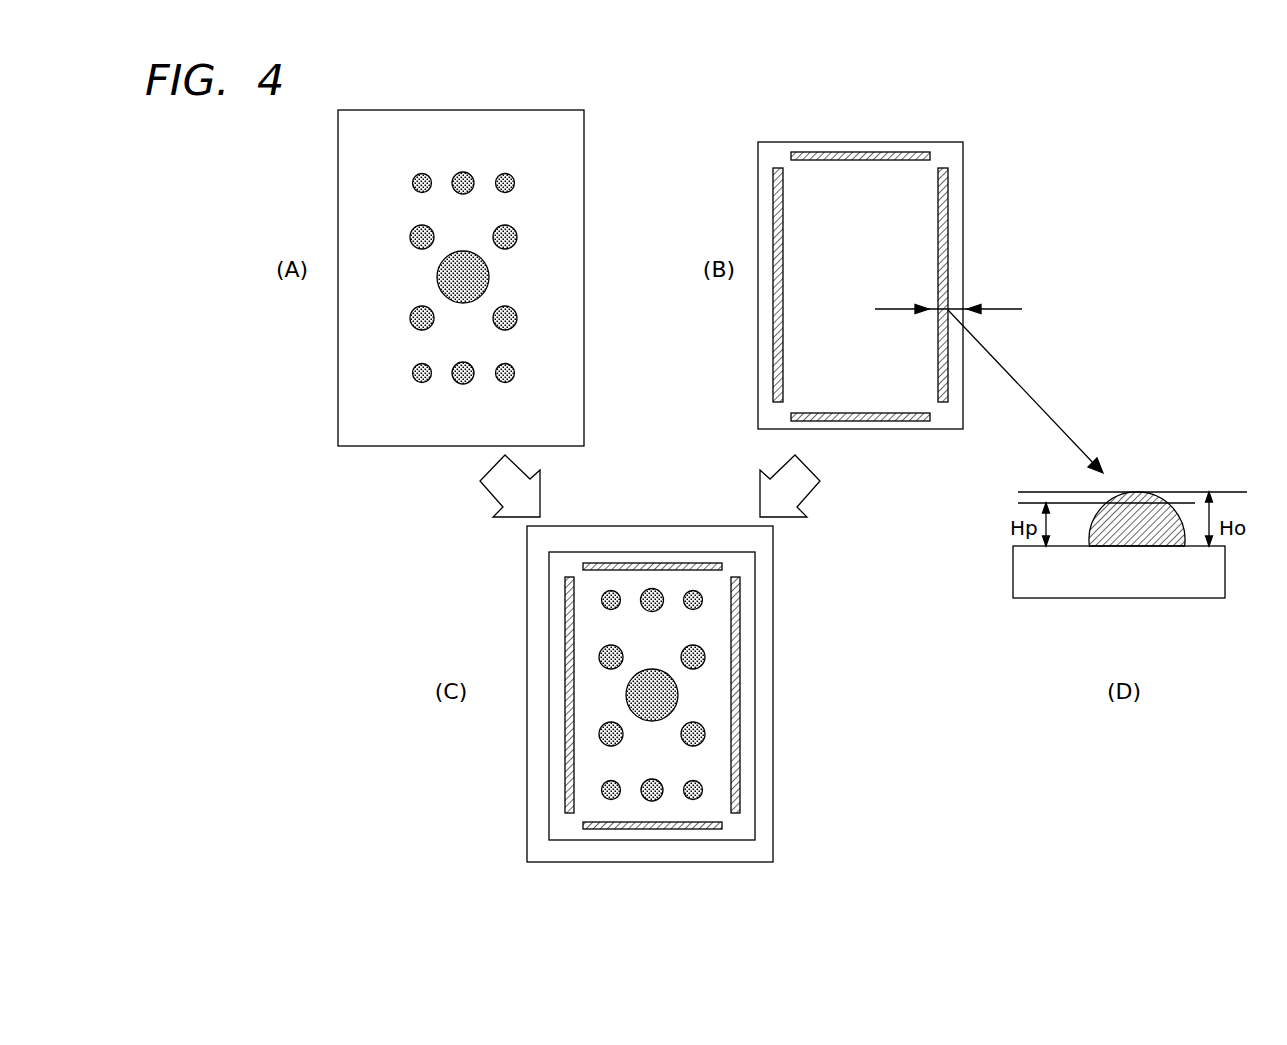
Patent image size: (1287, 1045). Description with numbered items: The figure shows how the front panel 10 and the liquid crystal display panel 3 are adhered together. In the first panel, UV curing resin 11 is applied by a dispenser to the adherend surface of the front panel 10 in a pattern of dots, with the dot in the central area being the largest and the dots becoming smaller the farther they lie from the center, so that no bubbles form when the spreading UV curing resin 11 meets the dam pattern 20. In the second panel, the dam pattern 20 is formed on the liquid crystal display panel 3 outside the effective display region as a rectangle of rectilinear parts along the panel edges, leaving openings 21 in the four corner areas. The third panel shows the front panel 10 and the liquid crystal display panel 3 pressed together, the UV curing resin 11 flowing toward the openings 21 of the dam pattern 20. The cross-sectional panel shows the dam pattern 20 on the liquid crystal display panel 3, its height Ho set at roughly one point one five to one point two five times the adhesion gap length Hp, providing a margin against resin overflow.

The liquid crystal display panel 3 is at (963, 272).
The front panel 10 is at (584, 301).
The UV curing resin 11 is at (517, 236).
The dam pattern 20 is at (946, 222).
The openings 21 is at (942, 158).